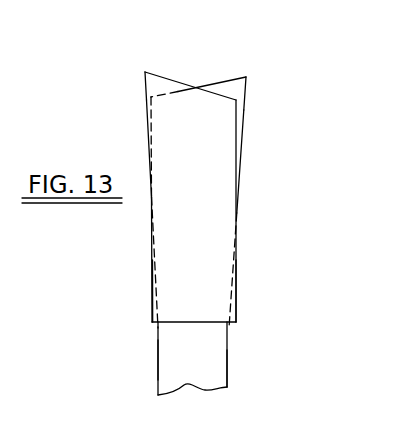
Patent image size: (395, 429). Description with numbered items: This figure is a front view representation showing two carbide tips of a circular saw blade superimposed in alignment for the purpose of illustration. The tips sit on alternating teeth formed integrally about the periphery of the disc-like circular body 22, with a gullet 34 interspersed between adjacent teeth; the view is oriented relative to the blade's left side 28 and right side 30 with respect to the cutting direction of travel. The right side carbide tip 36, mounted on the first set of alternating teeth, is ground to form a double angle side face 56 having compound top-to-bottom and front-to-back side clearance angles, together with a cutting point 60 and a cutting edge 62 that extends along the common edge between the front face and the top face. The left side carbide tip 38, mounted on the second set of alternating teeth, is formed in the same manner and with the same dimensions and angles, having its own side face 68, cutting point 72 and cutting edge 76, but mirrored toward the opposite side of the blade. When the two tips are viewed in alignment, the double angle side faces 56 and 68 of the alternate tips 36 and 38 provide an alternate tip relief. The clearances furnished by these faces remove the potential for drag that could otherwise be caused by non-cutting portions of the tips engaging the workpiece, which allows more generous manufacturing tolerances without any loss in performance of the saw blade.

The disc-like circular body 22 is at (240, 339).
The left side 28 is at (227, 378).
The right side 30 is at (158, 358).
The gullet 34 is at (212, 365).
The right side carbide tip 36 is at (250, 281).
The left side carbide tip 38 is at (248, 182).
The double angle side face 56 is at (145, 108).
The cutting point 60 is at (145, 72).
The cutting edge 62 is at (172, 81).
The side face 68 is at (243, 130).
The cutting point 72 is at (246, 77).
The cutting edge 76 is at (220, 77).